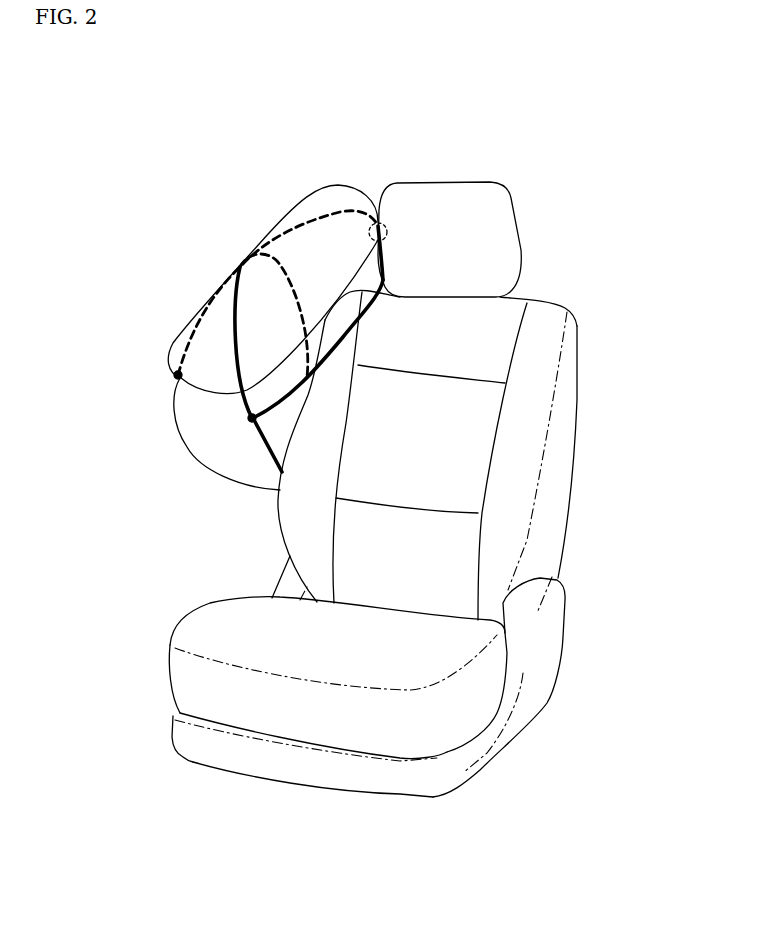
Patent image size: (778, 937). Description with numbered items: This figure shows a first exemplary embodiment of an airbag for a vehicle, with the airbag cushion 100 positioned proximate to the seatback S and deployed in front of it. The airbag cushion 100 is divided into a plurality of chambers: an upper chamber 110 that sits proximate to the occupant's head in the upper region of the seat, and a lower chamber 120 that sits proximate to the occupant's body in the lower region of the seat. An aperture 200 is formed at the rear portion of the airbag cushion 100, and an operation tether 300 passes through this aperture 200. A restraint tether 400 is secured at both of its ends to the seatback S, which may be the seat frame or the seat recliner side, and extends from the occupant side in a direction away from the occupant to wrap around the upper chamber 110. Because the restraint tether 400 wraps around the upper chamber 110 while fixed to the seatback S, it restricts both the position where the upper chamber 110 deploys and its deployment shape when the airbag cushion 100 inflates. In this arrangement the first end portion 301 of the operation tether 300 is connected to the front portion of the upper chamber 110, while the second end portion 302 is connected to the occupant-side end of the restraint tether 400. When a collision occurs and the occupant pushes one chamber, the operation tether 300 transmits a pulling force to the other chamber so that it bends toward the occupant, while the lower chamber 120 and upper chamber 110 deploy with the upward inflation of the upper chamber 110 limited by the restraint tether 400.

The airbag cushion 100 is at (216, 308).
The upper chamber 110 is at (310, 205).
The lower chamber 120 is at (200, 441).
The aperture 200 is at (358, 175).
The operation tether 300 is at (400, 299).
The first end portion 301 is at (193, 330).
The second end portion 302 is at (285, 401).
The restraint tether 400 is at (278, 264).
The seatback S is at (563, 402).